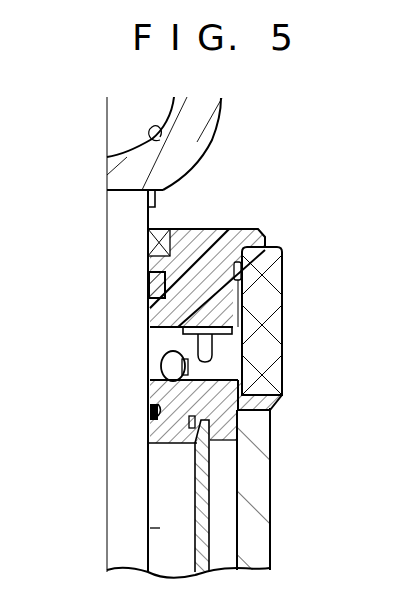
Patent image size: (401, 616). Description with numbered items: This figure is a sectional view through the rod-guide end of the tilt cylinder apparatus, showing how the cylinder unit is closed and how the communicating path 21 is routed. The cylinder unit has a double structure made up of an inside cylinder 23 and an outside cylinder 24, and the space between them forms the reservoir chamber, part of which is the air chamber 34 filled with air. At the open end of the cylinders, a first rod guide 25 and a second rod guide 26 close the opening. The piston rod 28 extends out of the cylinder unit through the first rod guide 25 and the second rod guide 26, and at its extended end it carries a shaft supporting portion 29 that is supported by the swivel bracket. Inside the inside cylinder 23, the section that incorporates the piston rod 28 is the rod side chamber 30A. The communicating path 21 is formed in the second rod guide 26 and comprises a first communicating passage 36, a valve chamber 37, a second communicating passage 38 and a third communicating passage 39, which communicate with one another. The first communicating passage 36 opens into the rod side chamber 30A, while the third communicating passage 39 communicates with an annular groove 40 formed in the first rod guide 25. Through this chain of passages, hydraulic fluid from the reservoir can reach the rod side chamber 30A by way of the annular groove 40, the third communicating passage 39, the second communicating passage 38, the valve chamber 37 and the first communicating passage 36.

The communicating path 21 is at (146, 380).
The inside cylinder 23 is at (205, 548).
The outside cylinder 24 is at (270, 447).
The first rod guide 25 is at (283, 271).
The second rod guide 26 is at (282, 393).
The piston rod 28 is at (112, 223).
The shaft supporting portion 29 is at (160, 138).
The rod side chamber 30A is at (160, 528).
The air chamber 34 is at (240, 503).
The first communicating passage 36 is at (150, 403).
The valve chamber 37 is at (162, 352).
The second communicating passage 38 is at (283, 358).
The third communicating passage 39 is at (283, 327).
The annular groove 40 is at (190, 328).